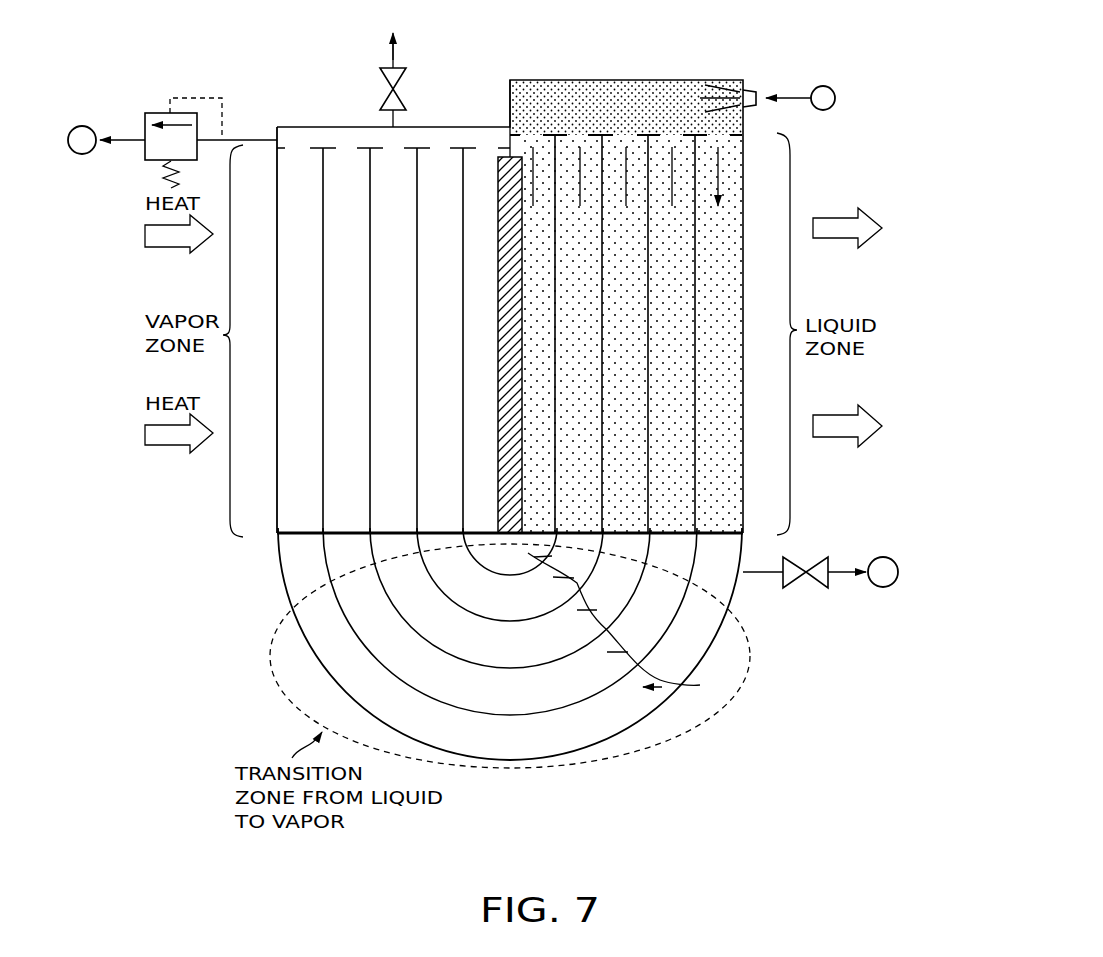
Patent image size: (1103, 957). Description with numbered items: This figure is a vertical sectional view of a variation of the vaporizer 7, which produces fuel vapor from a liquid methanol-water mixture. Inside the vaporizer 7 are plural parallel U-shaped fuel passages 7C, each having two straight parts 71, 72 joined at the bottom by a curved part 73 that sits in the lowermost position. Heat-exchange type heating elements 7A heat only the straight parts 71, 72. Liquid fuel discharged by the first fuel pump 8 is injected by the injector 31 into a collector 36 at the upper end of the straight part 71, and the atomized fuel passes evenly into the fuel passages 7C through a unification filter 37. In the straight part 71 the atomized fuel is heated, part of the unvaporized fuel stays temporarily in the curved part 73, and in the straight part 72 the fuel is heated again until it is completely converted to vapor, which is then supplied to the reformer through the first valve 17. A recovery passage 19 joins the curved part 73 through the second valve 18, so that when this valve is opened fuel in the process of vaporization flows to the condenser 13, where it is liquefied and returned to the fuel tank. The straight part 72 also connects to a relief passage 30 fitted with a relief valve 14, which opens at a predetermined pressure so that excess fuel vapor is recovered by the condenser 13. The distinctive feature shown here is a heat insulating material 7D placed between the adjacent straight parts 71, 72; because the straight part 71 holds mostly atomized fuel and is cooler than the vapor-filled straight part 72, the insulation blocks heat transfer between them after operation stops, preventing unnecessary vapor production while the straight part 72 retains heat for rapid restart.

The vaporizer 7 is at (640, 724).
The heating elements 7A is at (273, 509).
The fuel passages 7C is at (665, 680).
The heat insulating material 7D is at (504, 155).
The first fuel pump 8 is at (826, 111).
The condenser 13 is at (866, 618).
The relief valve 14 is at (155, 112).
The first valve 17 is at (400, 81).
The second valve 18 is at (800, 560).
The recovery passage 19 is at (844, 564).
The relief passage 30 is at (238, 137).
The injector 31 is at (750, 88).
The collector 36 is at (560, 90).
The unification filter 37 is at (700, 137).
The straight part 71 is at (743, 479).
The straight part 72 is at (290, 453).
The curved part 73 is at (513, 742).